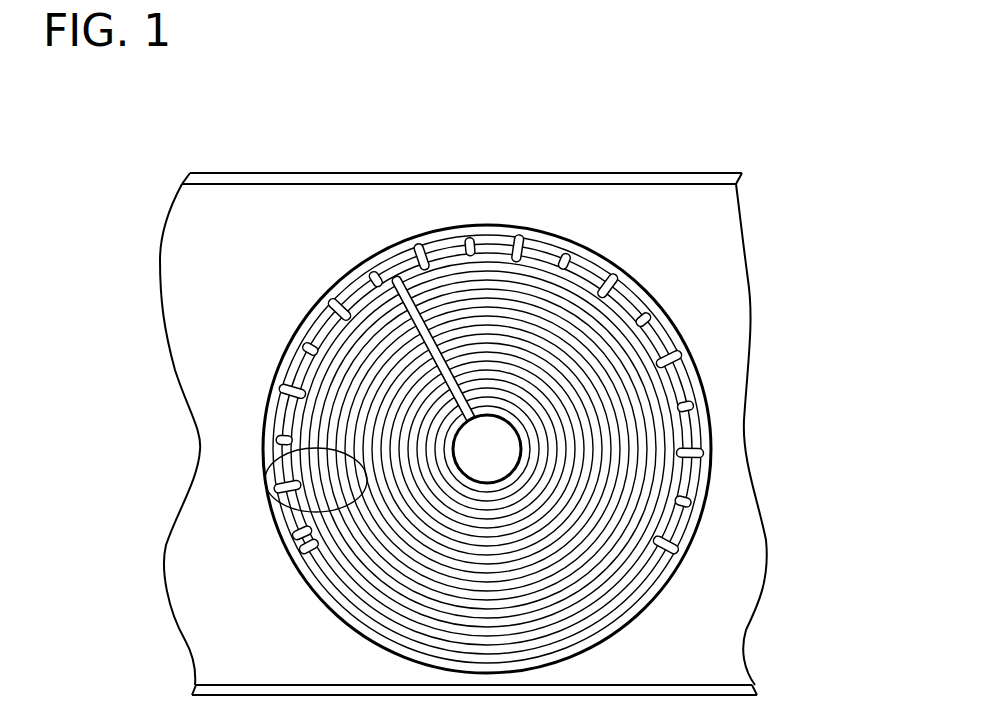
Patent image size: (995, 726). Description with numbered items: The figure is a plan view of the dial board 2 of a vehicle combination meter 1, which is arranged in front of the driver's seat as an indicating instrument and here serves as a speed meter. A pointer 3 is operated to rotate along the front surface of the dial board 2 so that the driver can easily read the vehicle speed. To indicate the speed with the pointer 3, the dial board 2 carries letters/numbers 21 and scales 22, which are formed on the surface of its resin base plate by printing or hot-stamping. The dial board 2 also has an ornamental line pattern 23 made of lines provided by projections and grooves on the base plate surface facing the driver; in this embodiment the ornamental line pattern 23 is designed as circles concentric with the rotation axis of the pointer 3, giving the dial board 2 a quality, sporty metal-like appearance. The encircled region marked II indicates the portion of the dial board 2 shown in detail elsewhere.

The combination meter 1 is at (170, 105).
The dial board 2 is at (630, 272).
The pointer 3 is at (408, 308).
The letters/numbers 21 is at (558, 322).
The scales 22 is at (694, 451).
The ornamental line pattern 23 is at (498, 234).
The section line II is at (268, 466).